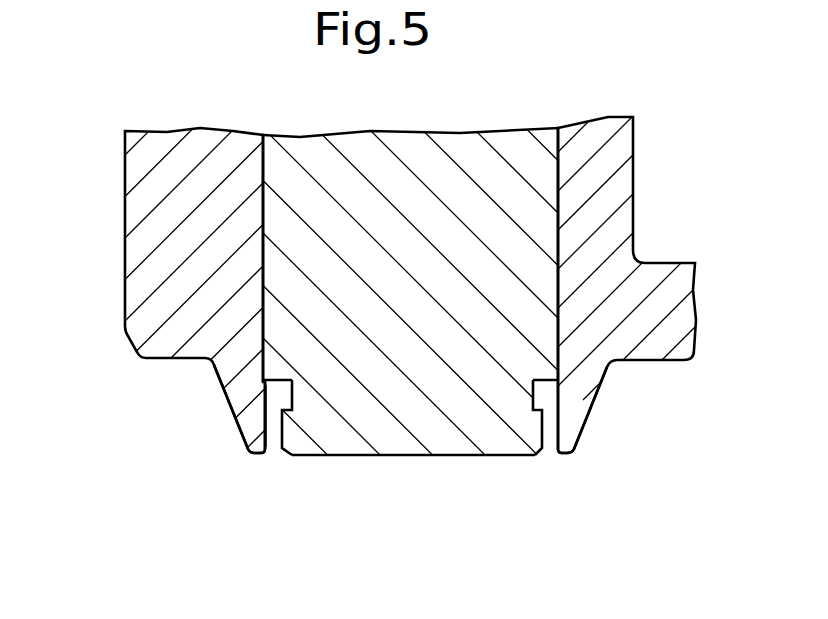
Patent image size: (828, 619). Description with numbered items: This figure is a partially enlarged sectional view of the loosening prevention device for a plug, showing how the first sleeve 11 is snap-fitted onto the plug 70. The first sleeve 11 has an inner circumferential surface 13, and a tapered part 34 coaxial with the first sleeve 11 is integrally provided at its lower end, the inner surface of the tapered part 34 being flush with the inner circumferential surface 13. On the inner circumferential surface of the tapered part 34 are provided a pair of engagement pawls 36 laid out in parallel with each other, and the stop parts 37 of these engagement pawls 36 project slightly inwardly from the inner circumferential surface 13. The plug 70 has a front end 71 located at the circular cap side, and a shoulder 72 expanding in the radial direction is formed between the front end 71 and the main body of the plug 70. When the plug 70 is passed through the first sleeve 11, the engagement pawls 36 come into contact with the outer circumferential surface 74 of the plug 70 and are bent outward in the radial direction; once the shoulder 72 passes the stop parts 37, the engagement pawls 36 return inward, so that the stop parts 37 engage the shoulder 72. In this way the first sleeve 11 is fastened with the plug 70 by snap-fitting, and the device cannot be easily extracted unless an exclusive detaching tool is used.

The first sleeve 11 is at (135, 208).
The inner circumferential surface 13 is at (266, 262).
The tapered part 34 is at (183, 390).
The engagement pawls 36 is at (240, 383).
The stop parts 37 is at (245, 425).
The plug 70 is at (458, 152).
The front end 71 is at (467, 443).
The shoulder 72 is at (287, 376).
The outer circumferential surface 74 is at (266, 243).